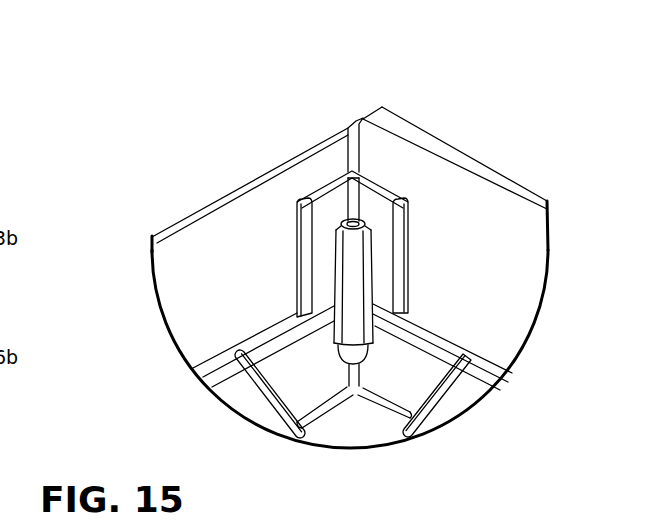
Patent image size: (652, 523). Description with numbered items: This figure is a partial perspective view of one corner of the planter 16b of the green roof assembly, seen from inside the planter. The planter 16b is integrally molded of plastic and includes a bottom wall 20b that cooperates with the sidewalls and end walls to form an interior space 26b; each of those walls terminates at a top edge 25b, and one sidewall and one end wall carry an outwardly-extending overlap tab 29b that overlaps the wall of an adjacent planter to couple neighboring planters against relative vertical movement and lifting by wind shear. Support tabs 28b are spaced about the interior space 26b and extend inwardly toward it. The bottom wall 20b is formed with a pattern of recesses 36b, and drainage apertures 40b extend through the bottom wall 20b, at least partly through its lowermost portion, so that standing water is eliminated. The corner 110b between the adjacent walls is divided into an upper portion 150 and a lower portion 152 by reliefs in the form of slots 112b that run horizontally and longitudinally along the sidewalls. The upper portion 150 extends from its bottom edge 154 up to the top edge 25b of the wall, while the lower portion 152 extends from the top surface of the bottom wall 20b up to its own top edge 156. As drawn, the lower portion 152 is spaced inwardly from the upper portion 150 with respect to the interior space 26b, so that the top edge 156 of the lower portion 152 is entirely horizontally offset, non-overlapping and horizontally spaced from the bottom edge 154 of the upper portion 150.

The planter 16b is at (490, 137).
The bottom wall 20b is at (497, 362).
The top edge 25b is at (243, 182).
The interior space 26b is at (498, 240).
The support tab 28b is at (353, 278).
The overlap tab 29b is at (500, 188).
The recess 36b is at (377, 430).
The drainage aperture 40b is at (443, 410).
The corner 110b is at (350, 125).
The slot 112b is at (380, 178).
The upper portion 150 is at (304, 192).
The lower portion 152 is at (325, 237).
The bottom edge 154 is at (317, 188).
The top edge 156 is at (387, 188).